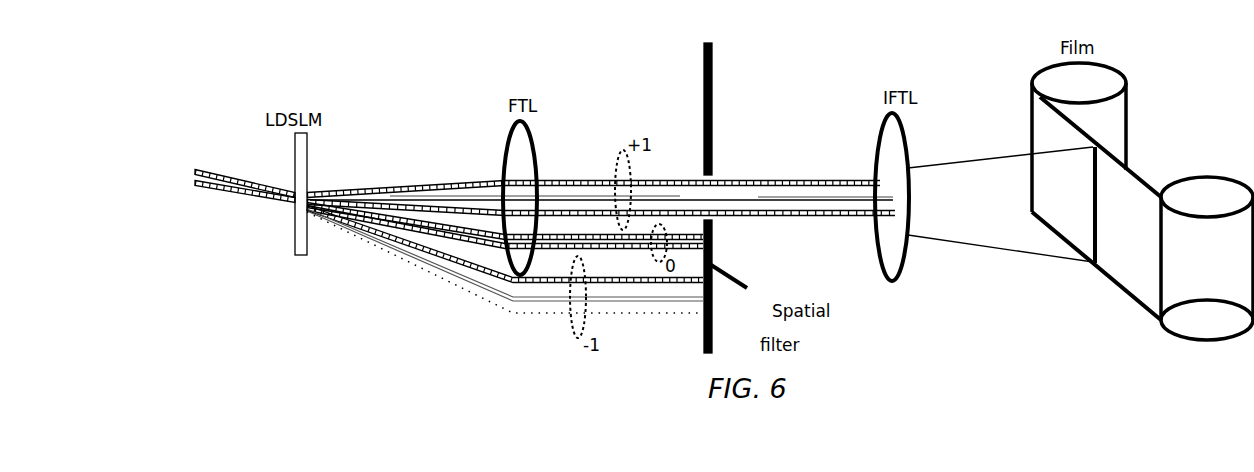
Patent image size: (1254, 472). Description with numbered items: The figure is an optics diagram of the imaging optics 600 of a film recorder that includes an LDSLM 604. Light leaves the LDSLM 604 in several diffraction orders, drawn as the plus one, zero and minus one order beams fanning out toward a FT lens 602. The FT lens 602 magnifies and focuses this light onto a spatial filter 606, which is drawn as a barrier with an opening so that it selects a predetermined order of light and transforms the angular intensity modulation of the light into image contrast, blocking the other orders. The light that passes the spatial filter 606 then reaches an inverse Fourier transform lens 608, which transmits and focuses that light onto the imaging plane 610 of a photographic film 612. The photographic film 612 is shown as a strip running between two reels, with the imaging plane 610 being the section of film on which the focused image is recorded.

The imaging optics 600 is at (237, 65).
The FT lens 602 is at (537, 148).
The LDSLM 604 is at (292, 249).
The spatial filter 606 is at (712, 86).
The inverse Fourier transform lens 608 is at (910, 149).
The imaging plane 610 is at (1090, 266).
The photographic film 612 is at (1128, 79).